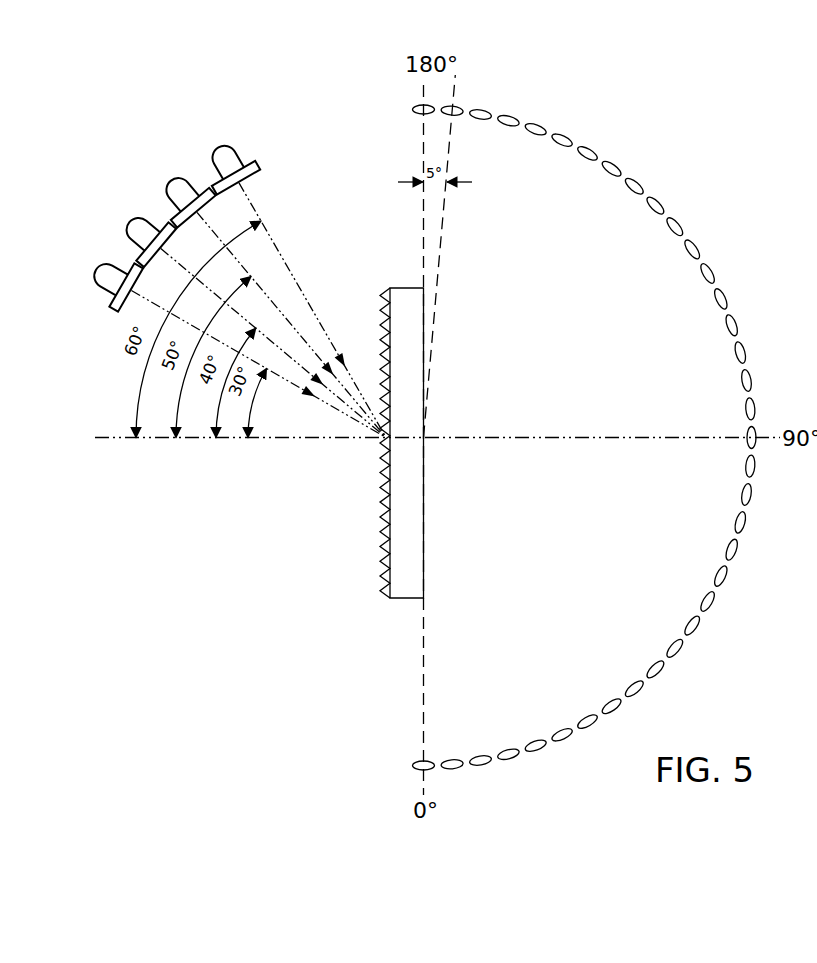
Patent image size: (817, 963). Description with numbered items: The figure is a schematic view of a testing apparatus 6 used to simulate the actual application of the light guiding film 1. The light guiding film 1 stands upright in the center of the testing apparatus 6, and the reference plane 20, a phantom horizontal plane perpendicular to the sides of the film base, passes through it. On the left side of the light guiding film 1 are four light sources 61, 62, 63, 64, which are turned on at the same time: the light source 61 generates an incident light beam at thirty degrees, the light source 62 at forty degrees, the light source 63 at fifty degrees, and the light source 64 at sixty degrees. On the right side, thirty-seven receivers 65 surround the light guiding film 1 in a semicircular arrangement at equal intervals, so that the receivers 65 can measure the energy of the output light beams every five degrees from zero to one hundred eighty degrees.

The light guiding film 1 is at (378, 285).
The testing apparatus 6 is at (654, 107).
The reference plane 20 is at (538, 438).
The light source 61 is at (113, 267).
The light source 62 is at (147, 222).
The light source 63 is at (188, 183).
The light source 64 is at (234, 152).
The receivers 65 is at (412, 110).